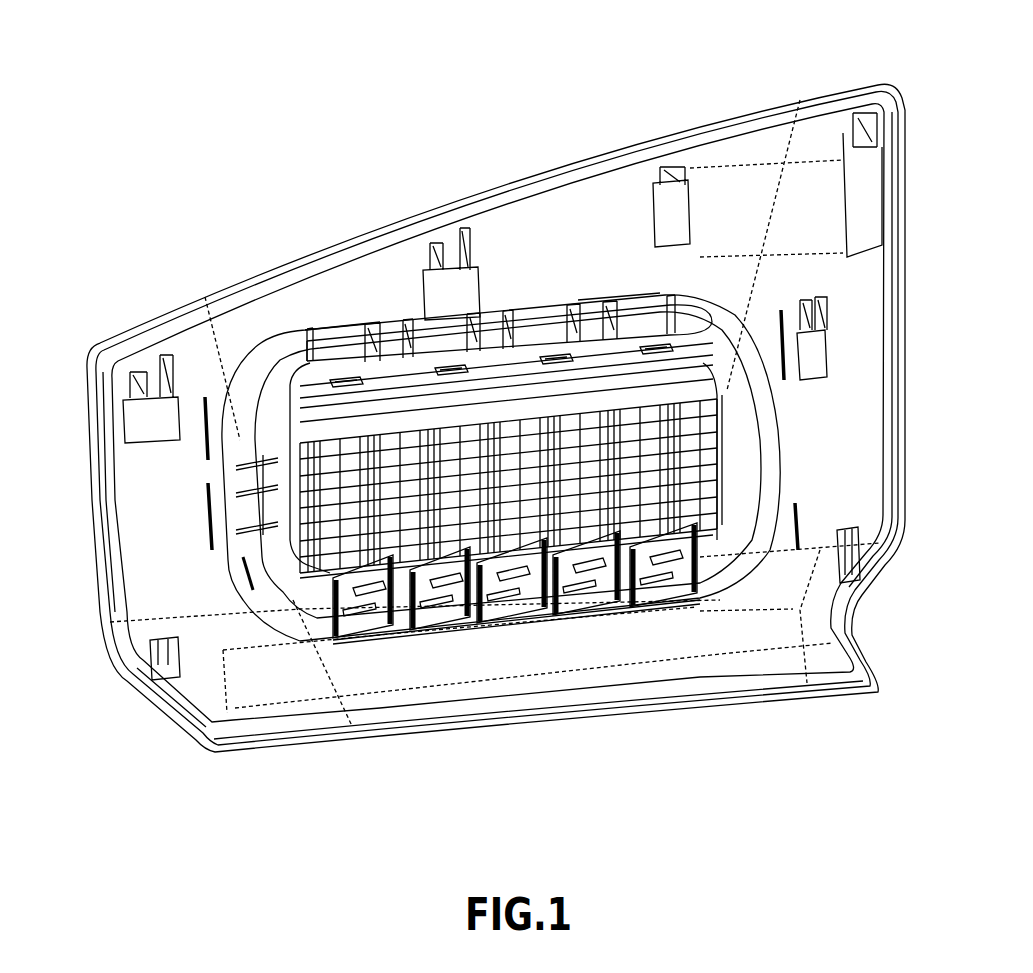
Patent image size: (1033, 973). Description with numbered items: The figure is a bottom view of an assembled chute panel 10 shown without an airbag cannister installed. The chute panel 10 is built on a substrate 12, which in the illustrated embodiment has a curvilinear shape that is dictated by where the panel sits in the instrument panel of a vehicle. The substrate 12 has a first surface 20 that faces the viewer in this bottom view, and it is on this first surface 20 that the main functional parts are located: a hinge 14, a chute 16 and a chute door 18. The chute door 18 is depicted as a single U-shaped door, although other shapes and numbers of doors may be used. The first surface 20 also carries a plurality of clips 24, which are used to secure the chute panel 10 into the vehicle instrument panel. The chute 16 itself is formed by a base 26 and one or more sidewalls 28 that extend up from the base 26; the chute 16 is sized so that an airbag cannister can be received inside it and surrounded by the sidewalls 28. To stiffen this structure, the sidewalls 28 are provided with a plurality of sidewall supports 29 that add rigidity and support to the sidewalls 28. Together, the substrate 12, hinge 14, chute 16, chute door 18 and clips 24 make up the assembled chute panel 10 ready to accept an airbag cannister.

The chute panel 10 is at (608, 124).
The substrate 12 is at (745, 115).
The hinge 14 is at (390, 407).
The chute 16 is at (557, 323).
The chute door 18 is at (327, 453).
The first surface 20 is at (607, 643).
The clips 24 is at (443, 243).
The base 26 is at (240, 590).
The sidewall 28 is at (297, 577).
The sidewall supports 29 is at (405, 620).